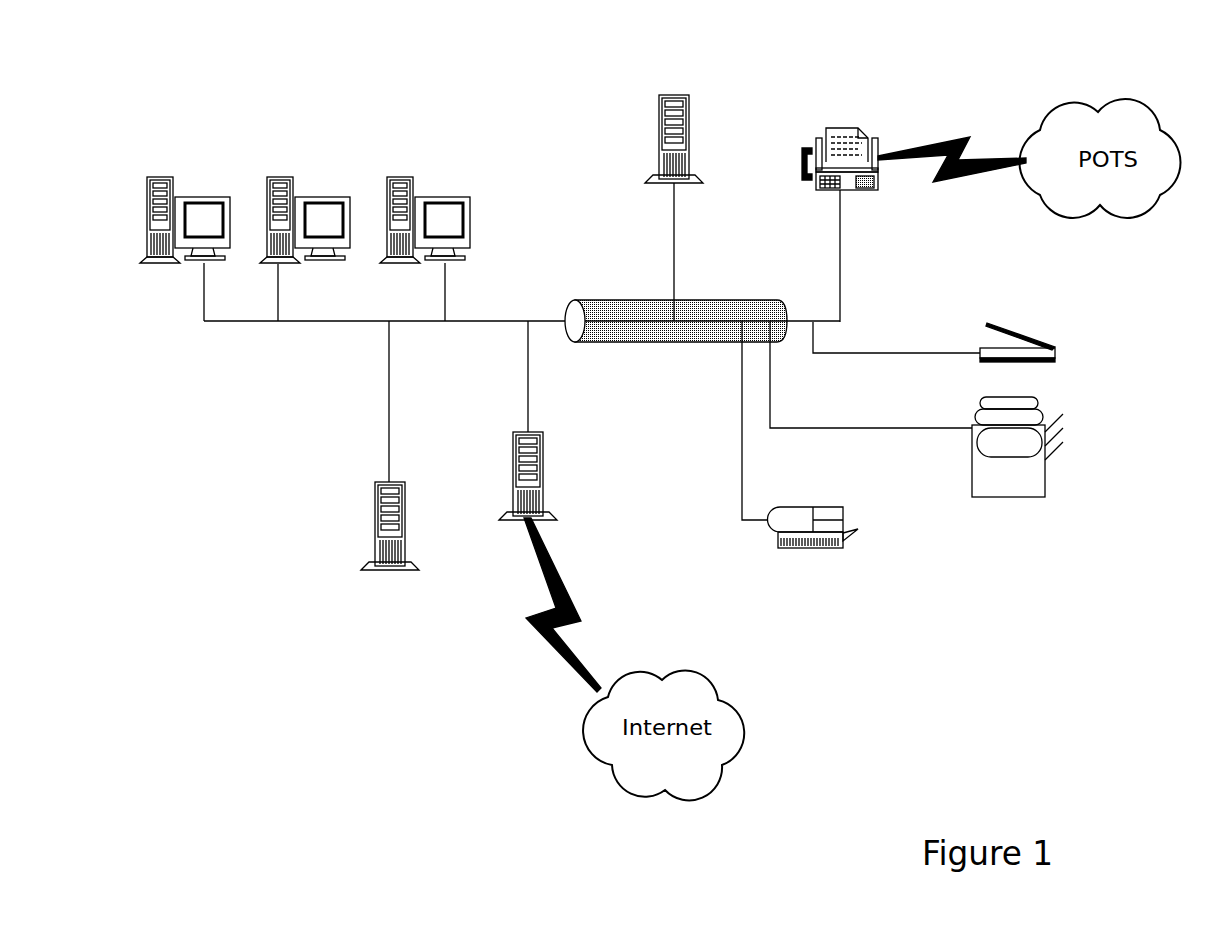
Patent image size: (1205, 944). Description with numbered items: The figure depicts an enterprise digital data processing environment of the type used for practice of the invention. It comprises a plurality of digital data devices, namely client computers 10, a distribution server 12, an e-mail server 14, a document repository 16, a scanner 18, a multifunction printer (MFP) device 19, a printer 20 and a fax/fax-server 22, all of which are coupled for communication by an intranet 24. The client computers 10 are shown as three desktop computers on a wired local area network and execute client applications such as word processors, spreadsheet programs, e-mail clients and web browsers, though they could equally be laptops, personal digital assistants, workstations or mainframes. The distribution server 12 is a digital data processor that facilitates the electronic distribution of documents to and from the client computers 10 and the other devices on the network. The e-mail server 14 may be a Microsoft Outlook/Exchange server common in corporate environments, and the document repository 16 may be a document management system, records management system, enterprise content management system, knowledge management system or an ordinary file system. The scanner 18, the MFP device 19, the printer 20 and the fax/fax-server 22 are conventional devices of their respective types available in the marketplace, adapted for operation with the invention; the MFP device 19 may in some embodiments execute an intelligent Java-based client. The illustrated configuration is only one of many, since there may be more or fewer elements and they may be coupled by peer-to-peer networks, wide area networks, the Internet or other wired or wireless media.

The client computers 10 is at (410, 115).
The distribution server 12 is at (662, 150).
The e-mail server 14 is at (513, 475).
The document repository 16 is at (373, 520).
The scanner 18 is at (1043, 338).
The multifunction printer (MFP) device 19 is at (970, 467).
The printer 20 is at (818, 507).
The fax/fax-server 22 is at (830, 190).
The intranet 24 is at (718, 300).